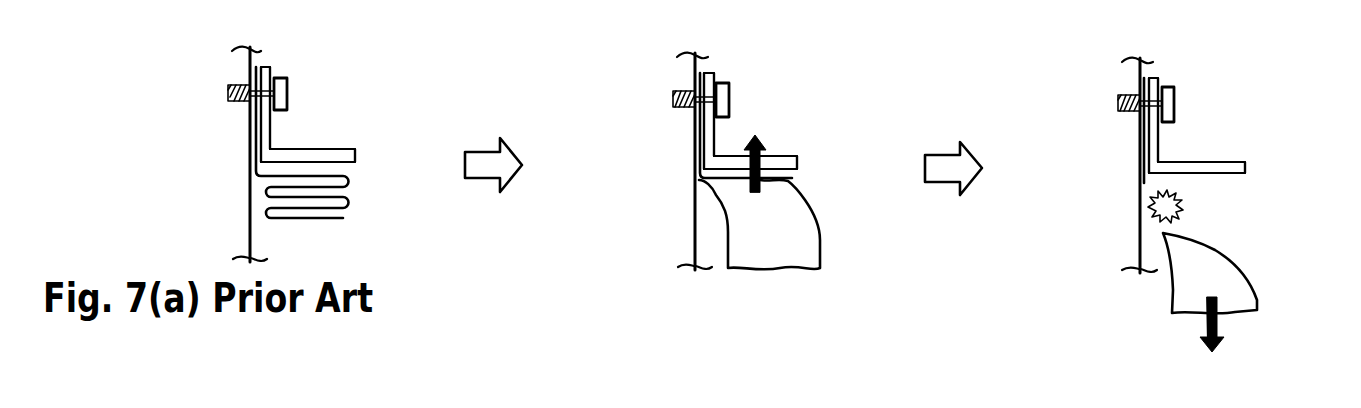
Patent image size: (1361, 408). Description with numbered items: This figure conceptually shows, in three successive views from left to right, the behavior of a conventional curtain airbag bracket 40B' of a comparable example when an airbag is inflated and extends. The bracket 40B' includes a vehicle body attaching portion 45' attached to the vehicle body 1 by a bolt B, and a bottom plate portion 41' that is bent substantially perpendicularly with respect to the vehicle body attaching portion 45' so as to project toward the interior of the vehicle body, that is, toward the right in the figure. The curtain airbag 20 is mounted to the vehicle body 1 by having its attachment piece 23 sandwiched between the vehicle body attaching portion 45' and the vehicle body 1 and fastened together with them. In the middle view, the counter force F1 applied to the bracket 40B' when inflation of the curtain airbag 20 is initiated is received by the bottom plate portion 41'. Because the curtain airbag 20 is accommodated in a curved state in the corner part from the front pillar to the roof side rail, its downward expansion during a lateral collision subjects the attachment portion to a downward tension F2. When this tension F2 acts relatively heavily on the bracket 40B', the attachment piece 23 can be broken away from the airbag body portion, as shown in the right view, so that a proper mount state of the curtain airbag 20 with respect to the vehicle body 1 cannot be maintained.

The vehicle body 1 is at (253, 242).
The attachment piece 23 is at (250, 72).
The bolt B is at (228, 93).
The vehicle body attaching portion 45' is at (748, 113).
The bottom plate portion 41' is at (753, 130).
The curtain airbag bracket 40B' is at (784, 112).
The curtain airbag 20 is at (350, 203).
The counter force F1 is at (797, 173).
The tension F2 is at (1222, 326).